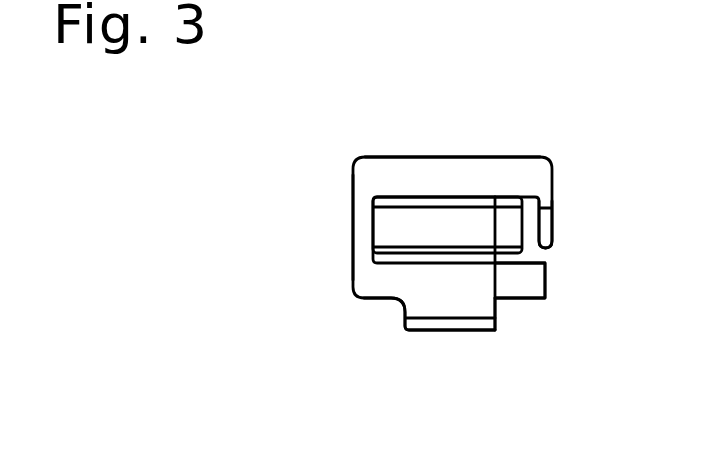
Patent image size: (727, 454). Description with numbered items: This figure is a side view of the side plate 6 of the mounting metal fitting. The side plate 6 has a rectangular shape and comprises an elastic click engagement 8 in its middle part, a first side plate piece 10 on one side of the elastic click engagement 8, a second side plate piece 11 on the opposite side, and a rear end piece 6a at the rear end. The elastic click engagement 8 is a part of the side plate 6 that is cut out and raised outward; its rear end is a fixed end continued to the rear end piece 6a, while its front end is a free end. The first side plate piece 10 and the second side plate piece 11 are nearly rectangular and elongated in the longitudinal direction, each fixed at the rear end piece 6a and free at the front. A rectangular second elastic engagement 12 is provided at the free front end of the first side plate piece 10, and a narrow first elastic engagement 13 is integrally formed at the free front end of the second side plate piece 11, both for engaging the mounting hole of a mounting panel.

The side plate 6 is at (322, 128).
The rear end piece 6a is at (352, 222).
The elastic click engagement 8 is at (514, 241).
The first side plate piece 10 is at (380, 283).
The second side plate piece 11 is at (465, 160).
The second elastic engagement 12 is at (535, 283).
The first elastic engagement 13 is at (549, 228).